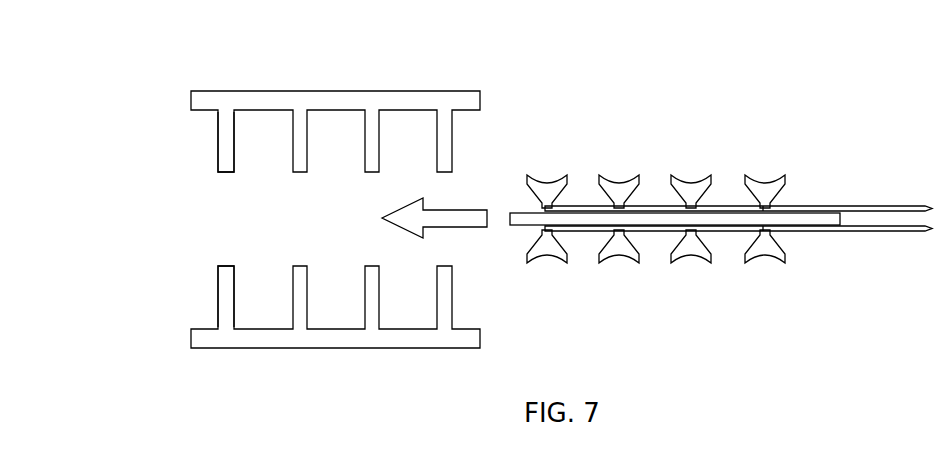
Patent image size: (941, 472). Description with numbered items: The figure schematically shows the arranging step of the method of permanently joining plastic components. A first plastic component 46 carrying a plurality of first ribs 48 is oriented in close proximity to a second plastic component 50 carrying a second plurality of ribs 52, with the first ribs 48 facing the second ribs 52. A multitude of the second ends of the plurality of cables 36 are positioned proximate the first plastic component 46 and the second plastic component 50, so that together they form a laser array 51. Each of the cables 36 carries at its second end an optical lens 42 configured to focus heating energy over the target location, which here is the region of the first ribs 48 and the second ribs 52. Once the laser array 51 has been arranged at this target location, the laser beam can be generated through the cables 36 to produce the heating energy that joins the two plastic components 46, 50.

The cables 36 is at (873, 233).
The optical lens 42 is at (613, 175).
The first plastic component 46 is at (338, 98).
The first rib 48 is at (223, 133).
The second plastic component 50 is at (338, 338).
The laser array 51 is at (721, 203).
The second ribs 52 is at (223, 295).